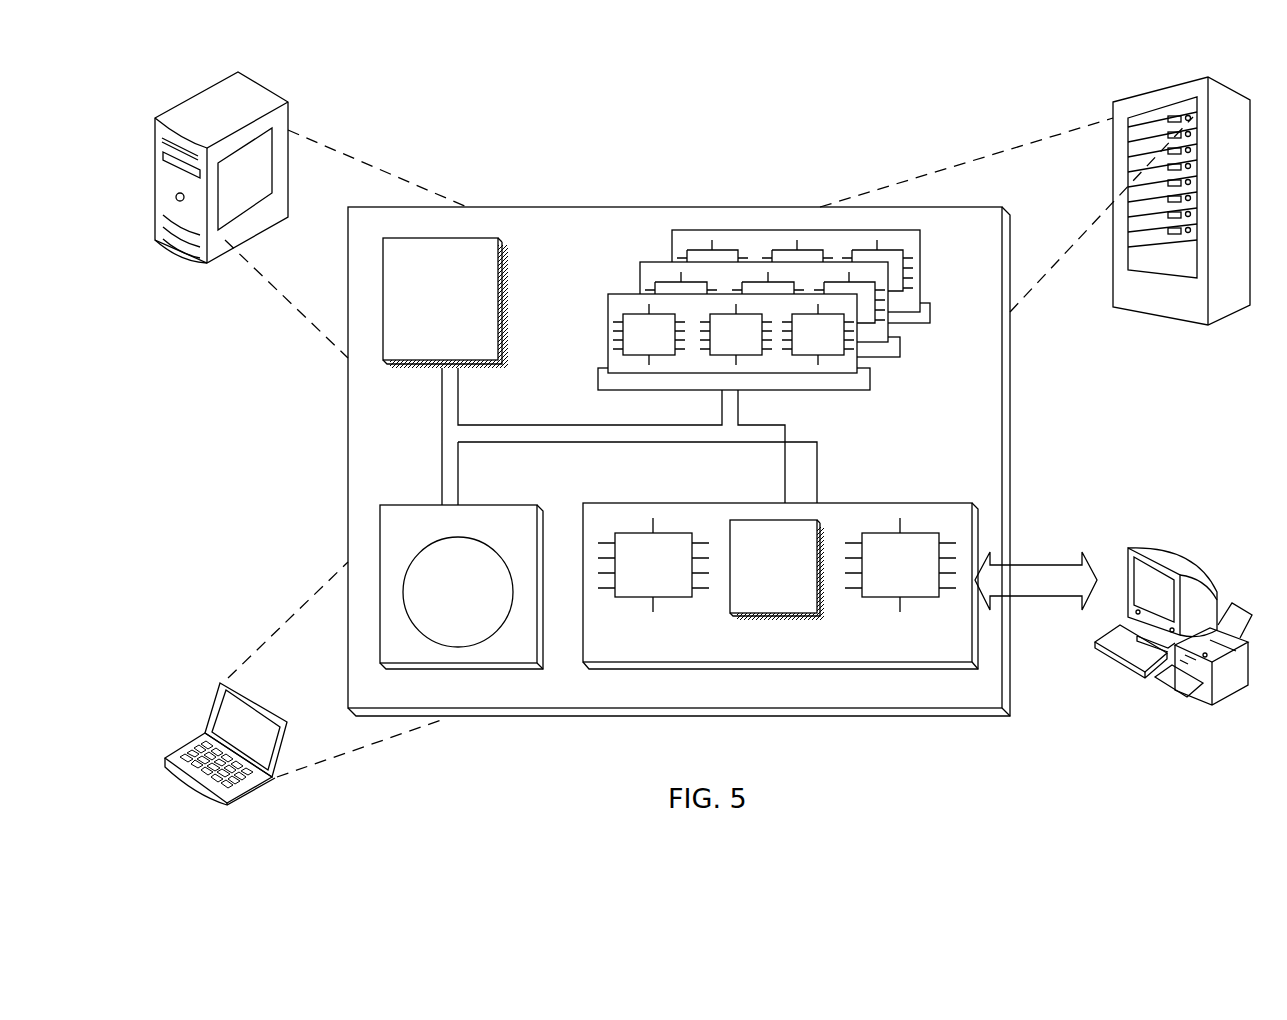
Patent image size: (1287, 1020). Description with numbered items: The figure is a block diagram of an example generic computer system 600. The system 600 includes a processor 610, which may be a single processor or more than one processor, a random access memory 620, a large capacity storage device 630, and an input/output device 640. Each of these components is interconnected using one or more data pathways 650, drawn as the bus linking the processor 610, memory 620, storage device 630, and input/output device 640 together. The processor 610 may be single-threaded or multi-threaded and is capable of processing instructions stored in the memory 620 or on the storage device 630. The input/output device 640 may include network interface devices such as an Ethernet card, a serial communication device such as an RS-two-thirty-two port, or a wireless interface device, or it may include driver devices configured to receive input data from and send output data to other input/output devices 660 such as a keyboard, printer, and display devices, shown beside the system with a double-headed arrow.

The computer system 600 is at (516, 96).
The processor 610 is at (490, 351).
The random access memory 620 is at (924, 354).
The large capacity storage device 630 is at (529, 653).
The input/output device 640 is at (882, 503).
The data pathways 650 is at (612, 443).
The input/output devices 660 is at (1130, 548).